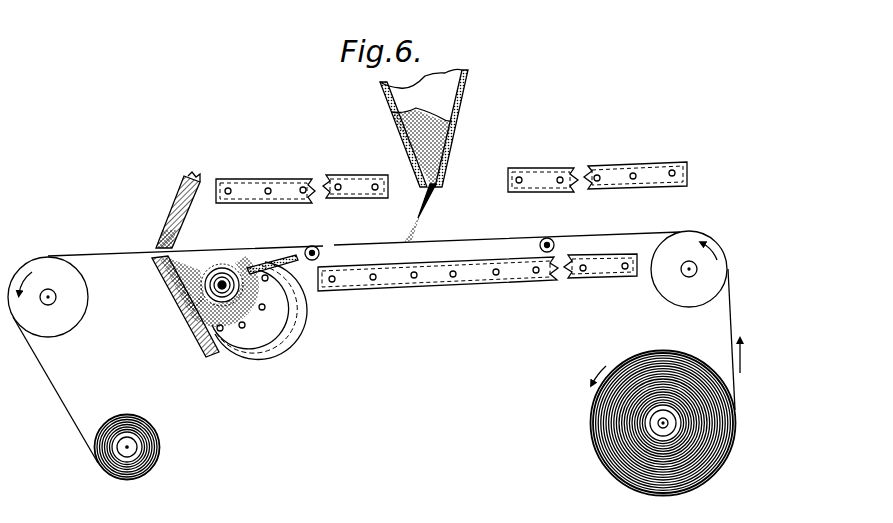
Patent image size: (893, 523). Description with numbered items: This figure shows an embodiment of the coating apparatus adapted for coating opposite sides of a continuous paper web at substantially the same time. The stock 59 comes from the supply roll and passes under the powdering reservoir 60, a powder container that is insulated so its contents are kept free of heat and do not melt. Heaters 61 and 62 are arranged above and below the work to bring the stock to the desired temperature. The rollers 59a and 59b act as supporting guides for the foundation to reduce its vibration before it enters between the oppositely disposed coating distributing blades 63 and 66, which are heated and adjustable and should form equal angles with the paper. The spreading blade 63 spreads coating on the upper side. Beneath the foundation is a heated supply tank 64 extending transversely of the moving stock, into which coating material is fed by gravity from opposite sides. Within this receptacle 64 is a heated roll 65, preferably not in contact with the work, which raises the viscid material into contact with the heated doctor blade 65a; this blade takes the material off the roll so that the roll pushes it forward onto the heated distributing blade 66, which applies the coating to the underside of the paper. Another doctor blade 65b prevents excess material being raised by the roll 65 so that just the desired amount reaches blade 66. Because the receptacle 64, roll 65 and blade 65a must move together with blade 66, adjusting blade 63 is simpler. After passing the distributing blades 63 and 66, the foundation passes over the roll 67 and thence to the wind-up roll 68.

The stock 59 is at (732, 325).
The roller 59a is at (333, 252).
The roller 59b is at (540, 245).
The powdering reservoir 60 is at (390, 106).
The heater 61 is at (608, 163).
The heater 62 is at (473, 283).
The spreading blade 63 is at (170, 205).
The heated supply tank 64 is at (248, 310).
The heated roll 65 is at (232, 268).
The heated doctor blade 65a is at (193, 266).
The doctor blade 65b is at (253, 269).
The heated distributing blade 66 is at (166, 280).
The roll 67 is at (55, 318).
The wind-up roll 68 is at (145, 440).